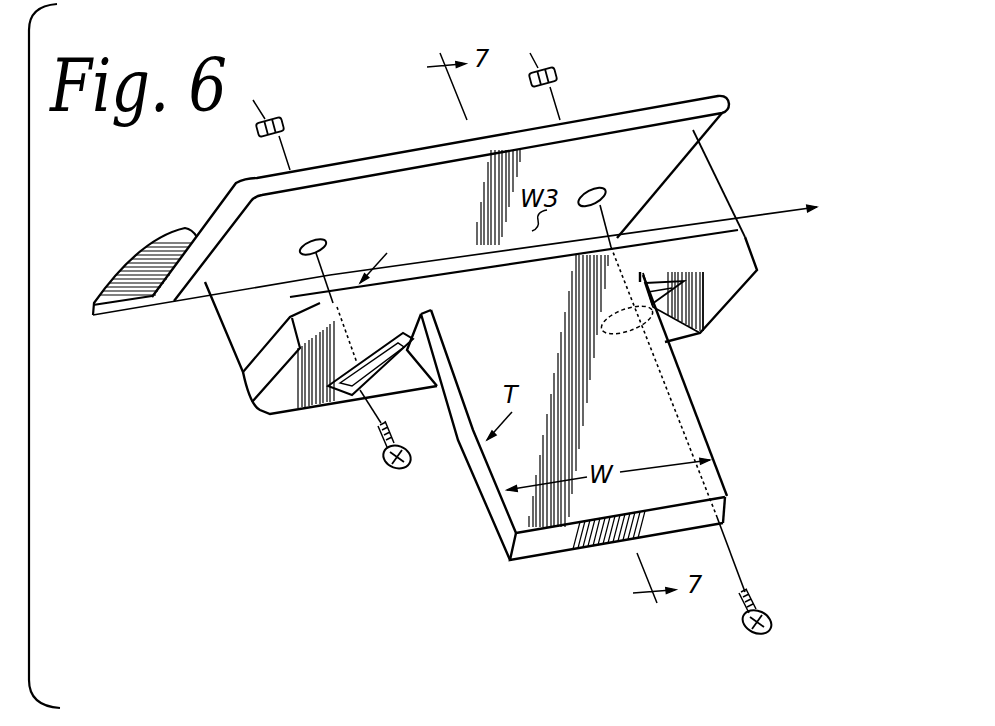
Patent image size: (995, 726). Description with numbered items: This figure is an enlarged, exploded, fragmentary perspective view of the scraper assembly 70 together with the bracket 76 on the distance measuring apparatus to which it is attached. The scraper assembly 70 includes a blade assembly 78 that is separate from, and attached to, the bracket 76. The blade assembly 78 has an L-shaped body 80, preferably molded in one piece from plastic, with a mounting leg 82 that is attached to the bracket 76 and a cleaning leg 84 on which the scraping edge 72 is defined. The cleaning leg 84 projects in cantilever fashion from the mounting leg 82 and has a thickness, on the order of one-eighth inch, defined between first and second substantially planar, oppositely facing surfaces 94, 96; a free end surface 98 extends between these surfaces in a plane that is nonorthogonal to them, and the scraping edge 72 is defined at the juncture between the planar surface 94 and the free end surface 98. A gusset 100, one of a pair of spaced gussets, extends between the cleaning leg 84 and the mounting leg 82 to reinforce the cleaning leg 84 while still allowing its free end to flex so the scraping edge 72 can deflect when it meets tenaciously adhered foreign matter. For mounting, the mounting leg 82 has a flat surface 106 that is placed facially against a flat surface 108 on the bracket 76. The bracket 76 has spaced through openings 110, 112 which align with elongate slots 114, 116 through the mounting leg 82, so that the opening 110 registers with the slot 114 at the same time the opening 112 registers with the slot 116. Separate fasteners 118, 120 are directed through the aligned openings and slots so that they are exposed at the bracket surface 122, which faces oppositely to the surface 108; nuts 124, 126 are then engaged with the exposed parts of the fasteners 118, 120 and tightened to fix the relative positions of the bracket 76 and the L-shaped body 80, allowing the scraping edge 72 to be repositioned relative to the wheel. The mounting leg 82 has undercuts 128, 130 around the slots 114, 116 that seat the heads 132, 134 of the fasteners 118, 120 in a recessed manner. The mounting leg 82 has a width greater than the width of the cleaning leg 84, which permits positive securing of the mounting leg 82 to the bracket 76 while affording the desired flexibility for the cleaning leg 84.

The scraper assembly 70 is at (823, 233).
The scraping edge 72 is at (510, 560).
The bracket 76 is at (460, 180).
The blade assembly 78 is at (520, 437).
The L-shaped body 80 is at (660, 443).
The mounting leg 82 is at (280, 390).
The cleaning leg 84 is at (693, 490).
The first planar surface 94 is at (690, 530).
The second planar surface 96 is at (660, 422).
The free end surface 98 is at (557, 543).
The gusset 100 is at (463, 461).
The flat surface 106 is at (427, 270).
The flat surface 108 is at (543, 150).
The through opening 110 is at (316, 240).
The through opening 112 is at (600, 186).
The elongate slot 114 is at (344, 410).
The elongate slot 116 is at (665, 342).
The fastener 118 is at (387, 470).
The fastener 120 is at (758, 636).
The bracket surface 122 is at (425, 146).
The nut 124 is at (281, 116).
The nut 126 is at (554, 62).
The undercut 128 is at (423, 290).
The undercut 130 is at (647, 300).
The fastener head 132 is at (385, 460).
The fastener head 134 is at (777, 613).